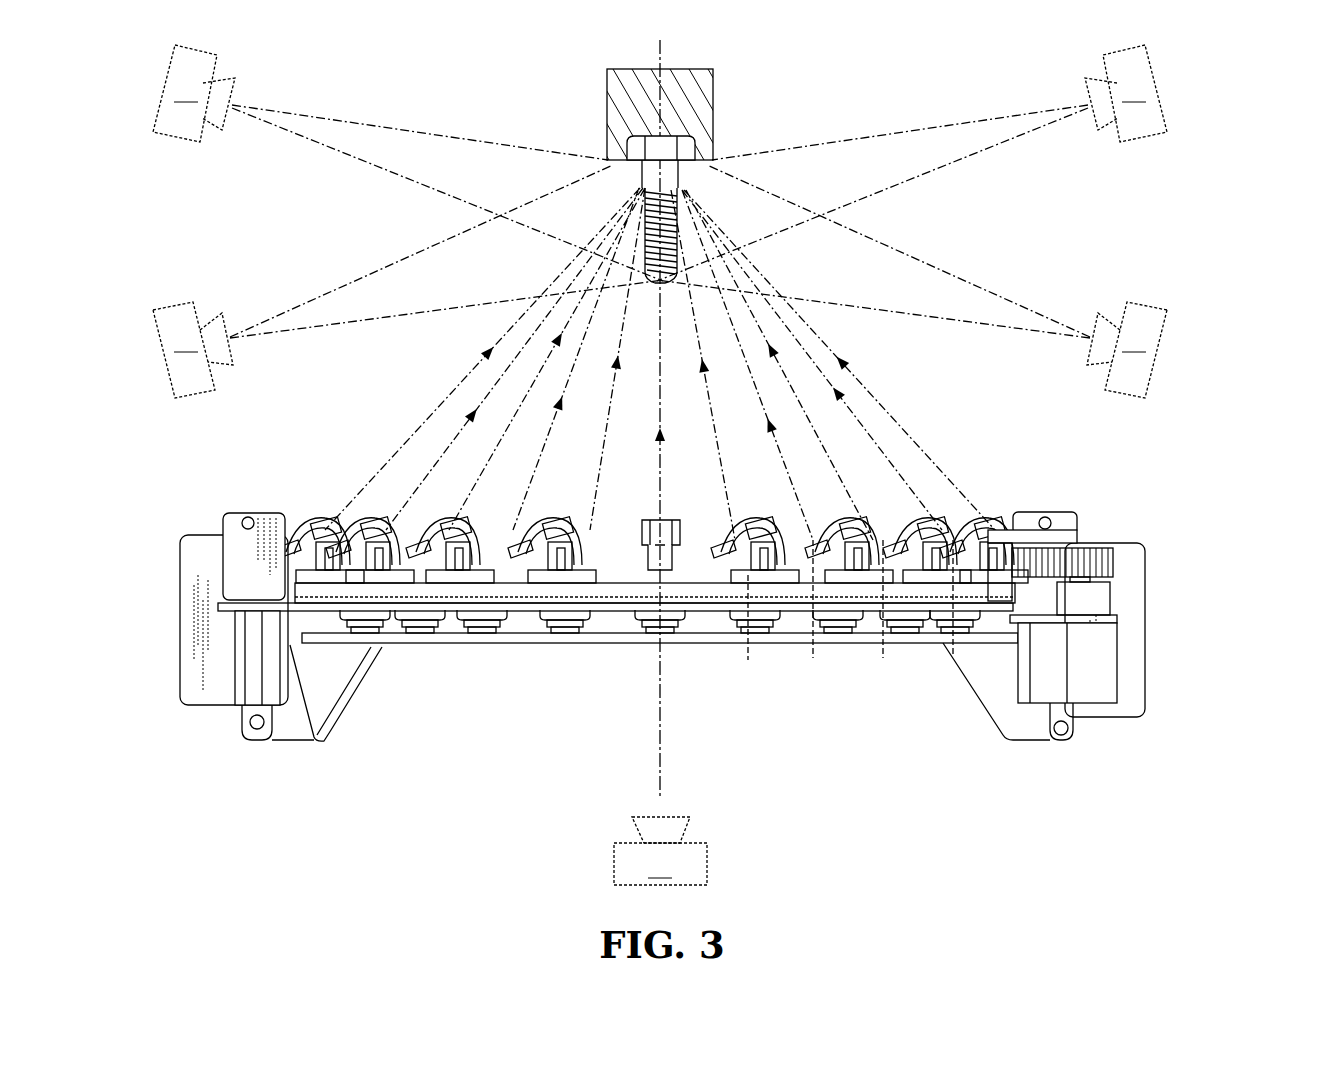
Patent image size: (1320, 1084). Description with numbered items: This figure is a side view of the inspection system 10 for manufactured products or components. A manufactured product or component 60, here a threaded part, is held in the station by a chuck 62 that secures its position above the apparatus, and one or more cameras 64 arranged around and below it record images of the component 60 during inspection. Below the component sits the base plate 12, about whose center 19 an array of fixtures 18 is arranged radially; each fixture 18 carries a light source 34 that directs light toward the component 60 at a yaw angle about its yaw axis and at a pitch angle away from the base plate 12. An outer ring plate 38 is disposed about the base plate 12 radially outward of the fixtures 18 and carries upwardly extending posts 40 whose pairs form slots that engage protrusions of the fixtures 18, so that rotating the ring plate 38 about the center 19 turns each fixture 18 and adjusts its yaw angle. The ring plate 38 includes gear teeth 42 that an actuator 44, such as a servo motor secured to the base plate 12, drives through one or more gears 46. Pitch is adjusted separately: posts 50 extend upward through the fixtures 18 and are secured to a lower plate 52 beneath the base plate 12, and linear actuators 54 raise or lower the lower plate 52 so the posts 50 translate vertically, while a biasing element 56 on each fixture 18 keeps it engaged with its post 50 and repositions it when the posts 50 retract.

The inspection system 10 is at (1242, 137).
The base plate 12 is at (713, 565).
The fixture 18 is at (958, 517).
The center 19 is at (663, 764).
The light source 34 is at (828, 540).
The outer ring plate 38 is at (462, 596).
The post 40 is at (565, 560).
The gear teeth 42 is at (958, 645).
The actuator 44 is at (1110, 652).
The gear 46 is at (1125, 552).
The post 50 is at (600, 550).
The lower plate 52 is at (411, 646).
The actuator 54 is at (1145, 635).
The biasing element 56 is at (908, 518).
The manufactured product or component 60 is at (678, 175).
The chuck 62 is at (713, 108).
The camera 64 is at (660, 465).